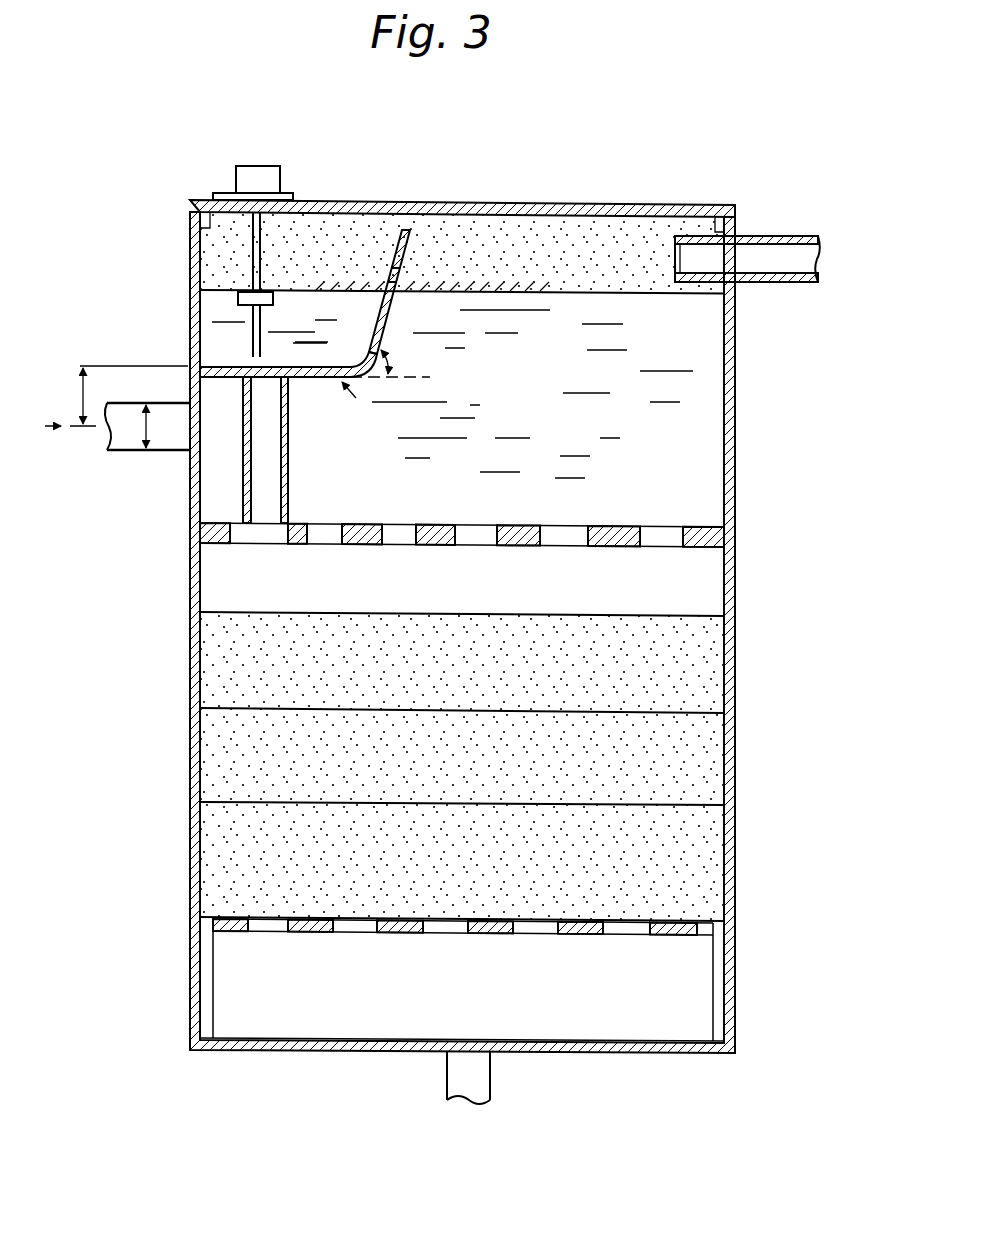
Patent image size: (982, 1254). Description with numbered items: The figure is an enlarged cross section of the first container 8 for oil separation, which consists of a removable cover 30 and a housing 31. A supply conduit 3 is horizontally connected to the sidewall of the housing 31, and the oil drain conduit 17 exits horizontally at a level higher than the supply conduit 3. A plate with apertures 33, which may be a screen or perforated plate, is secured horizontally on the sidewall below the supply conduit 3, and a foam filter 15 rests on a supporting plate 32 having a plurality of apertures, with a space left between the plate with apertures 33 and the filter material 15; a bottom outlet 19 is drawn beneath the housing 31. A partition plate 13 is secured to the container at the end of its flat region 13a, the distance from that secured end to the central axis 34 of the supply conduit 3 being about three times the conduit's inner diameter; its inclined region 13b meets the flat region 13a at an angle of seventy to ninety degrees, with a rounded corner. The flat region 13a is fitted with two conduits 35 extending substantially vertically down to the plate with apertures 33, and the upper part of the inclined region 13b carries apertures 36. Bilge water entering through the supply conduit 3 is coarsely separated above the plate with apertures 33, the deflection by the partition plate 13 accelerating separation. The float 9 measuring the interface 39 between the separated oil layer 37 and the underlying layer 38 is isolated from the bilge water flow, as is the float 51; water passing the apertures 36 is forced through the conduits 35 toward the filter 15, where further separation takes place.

The supply conduit 3 is at (138, 452).
The first container 8 is at (678, 178).
The float 9 is at (259, 163).
The partition plate 13 is at (400, 277).
The flat region of partition plate 13a is at (298, 383).
The inclined region of partition plate 13b is at (392, 302).
The foam filter 15 is at (215, 740).
The oil drain conduit 17 is at (782, 238).
The outlet pipe 19 is at (491, 1080).
The removable cover 30 is at (585, 202).
The housing 31 is at (735, 548).
The supporting plate 32 is at (682, 934).
The plate with apertures 33 is at (442, 526).
The central axis of supply conduit 34 is at (100, 440).
The conduits 35 is at (288, 492).
The apertures of inclined region 36 is at (388, 268).
The separated oil layer 37 is at (343, 224).
The underlying layer 38 is at (708, 337).
The interface 39 is at (656, 293).
The float 51 is at (238, 297).